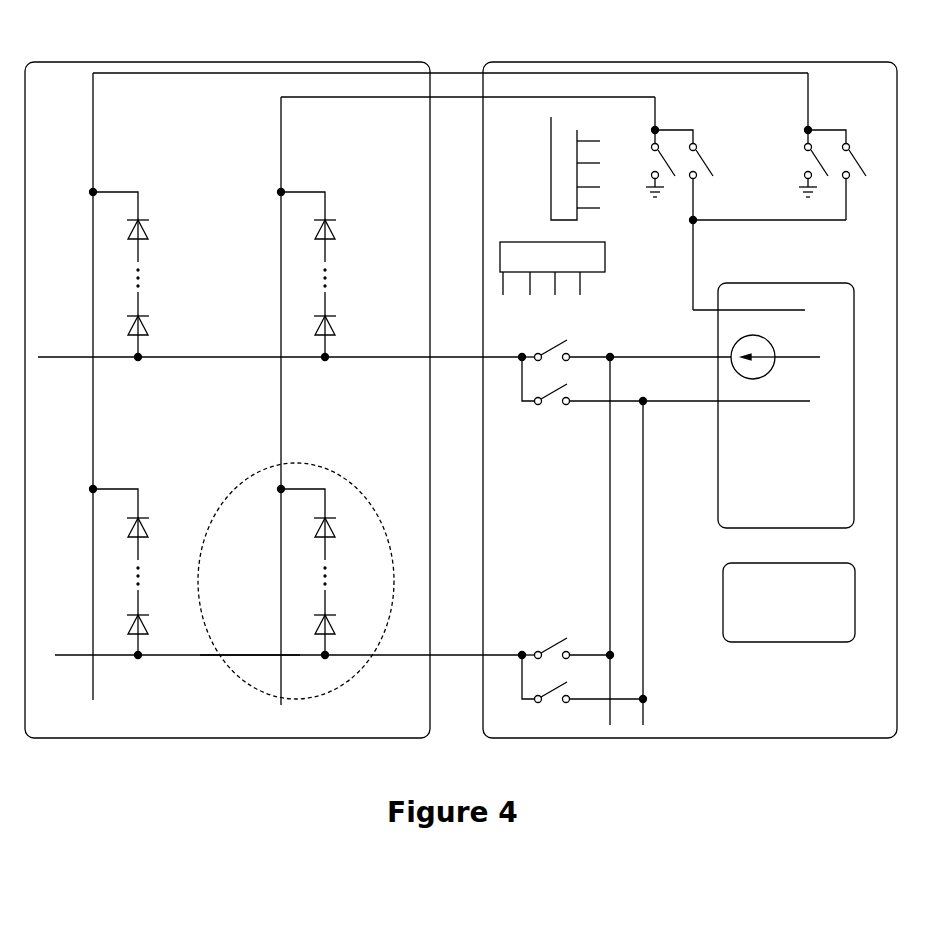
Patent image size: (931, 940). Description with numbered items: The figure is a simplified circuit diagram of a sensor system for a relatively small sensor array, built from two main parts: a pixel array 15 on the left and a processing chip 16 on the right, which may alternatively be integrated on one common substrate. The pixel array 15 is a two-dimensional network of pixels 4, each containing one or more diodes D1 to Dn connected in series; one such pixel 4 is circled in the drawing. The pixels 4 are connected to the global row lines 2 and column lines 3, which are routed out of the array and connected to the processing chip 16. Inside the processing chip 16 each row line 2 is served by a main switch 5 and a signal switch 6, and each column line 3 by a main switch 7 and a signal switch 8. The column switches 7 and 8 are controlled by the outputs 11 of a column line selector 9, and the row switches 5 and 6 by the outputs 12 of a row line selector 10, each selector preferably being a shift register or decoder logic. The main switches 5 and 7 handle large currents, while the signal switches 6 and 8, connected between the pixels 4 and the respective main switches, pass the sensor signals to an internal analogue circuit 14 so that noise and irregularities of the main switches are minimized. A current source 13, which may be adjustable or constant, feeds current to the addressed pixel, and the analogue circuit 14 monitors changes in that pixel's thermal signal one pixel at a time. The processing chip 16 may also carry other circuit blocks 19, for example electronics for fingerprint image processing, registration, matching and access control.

The row line 2 is at (250, 640).
The column line 3 is at (290, 401).
The pixel 4 is at (296, 581).
The row main switch 5 is at (670, 520).
The row signal switch 6 is at (666, 545).
The column main switch 7 is at (731, 135).
The column signal switch 8 is at (764, 220).
The column line selector 9 is at (564, 168).
The row line selector 10 is at (552, 258).
The outputs of column line selector 11 is at (597, 159).
The outputs of row line selector 12 is at (561, 289).
The current source 13 is at (771, 354).
The internal analogue circuit 14 is at (786, 405).
The pixel array 15 is at (227, 400).
The processing chip 16 is at (690, 400).
The other circuit blocks 19 is at (789, 602).
The diode Dn is at (350, 534).
The diode D1 is at (351, 617).